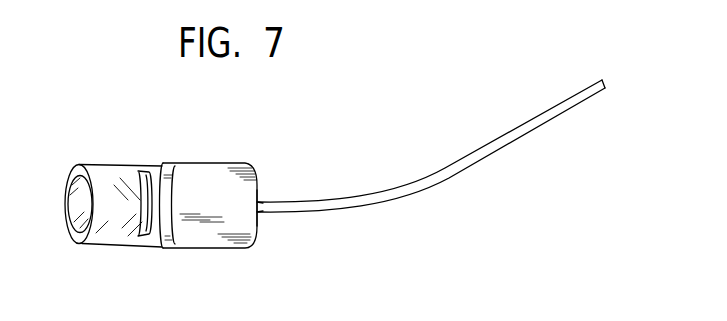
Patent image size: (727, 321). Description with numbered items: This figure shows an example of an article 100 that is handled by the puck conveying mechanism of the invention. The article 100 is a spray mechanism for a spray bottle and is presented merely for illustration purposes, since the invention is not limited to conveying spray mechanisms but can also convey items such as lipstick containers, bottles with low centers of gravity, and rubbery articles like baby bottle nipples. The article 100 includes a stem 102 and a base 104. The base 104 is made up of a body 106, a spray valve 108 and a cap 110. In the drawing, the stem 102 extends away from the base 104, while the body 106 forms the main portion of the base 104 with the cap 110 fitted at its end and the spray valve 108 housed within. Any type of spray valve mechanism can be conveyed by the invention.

The article 100 is at (279, 171).
The stem 102 is at (434, 172).
The base 104 is at (202, 146).
The body 106 is at (241, 229).
The spray valve 108 is at (102, 192).
The cap 110 is at (131, 248).